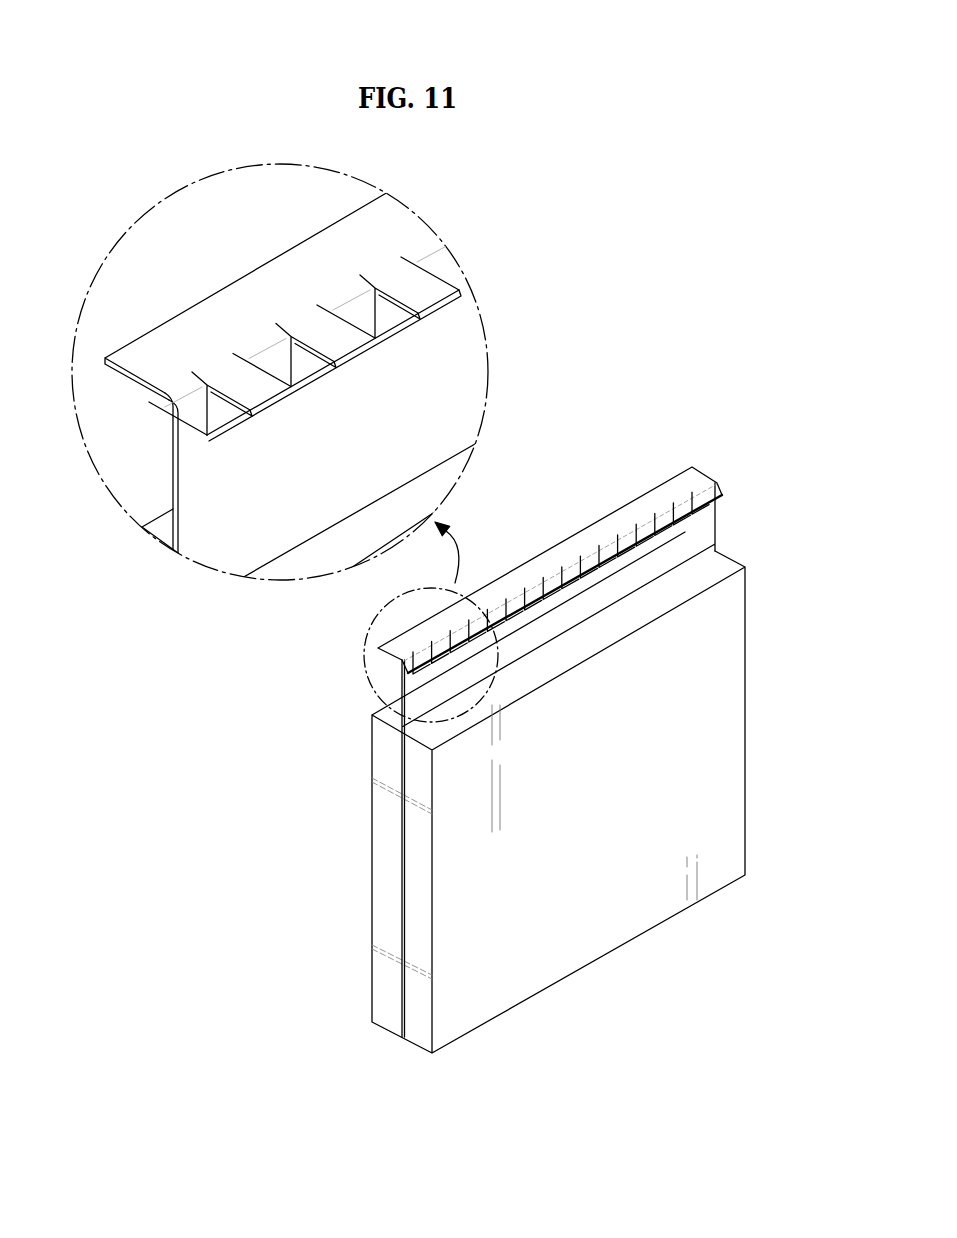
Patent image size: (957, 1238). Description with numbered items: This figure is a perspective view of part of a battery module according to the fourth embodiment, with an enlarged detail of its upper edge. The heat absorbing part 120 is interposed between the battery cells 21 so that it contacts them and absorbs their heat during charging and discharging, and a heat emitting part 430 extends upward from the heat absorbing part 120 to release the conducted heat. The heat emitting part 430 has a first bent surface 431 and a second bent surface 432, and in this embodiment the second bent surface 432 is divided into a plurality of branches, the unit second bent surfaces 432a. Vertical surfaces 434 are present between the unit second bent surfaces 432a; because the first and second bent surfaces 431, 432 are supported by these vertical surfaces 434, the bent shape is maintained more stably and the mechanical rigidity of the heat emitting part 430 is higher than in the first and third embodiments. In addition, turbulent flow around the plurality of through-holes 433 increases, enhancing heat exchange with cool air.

The battery cells 21 is at (413, 1030).
The heat absorbing part 120 is at (400, 904).
The heat emitting part 430 is at (380, 650).
The first bent surface 431 is at (147, 360).
The second bent surface 432 is at (568, 310).
The unit second bent surfaces 432a is at (430, 293).
The through-holes 433 is at (217, 408).
The vertical surfaces 434 is at (353, 297).